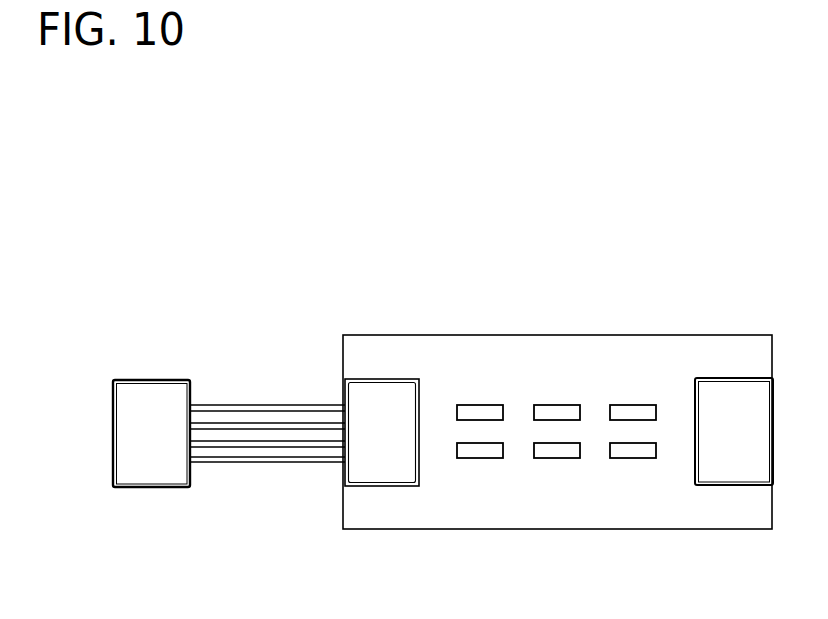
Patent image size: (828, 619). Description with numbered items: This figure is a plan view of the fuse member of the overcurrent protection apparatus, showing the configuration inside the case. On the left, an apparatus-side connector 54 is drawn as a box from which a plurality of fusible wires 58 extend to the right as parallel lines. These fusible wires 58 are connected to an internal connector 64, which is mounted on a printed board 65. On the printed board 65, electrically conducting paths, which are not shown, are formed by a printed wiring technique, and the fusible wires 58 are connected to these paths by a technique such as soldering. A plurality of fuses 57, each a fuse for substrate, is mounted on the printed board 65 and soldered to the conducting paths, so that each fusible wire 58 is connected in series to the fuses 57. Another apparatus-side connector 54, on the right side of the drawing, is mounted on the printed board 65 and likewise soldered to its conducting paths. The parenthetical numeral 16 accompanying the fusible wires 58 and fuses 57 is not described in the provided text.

The wiring member 16 is at (441, 399).
The apparatus-side connector 54 is at (152, 468).
The fuse 57 is at (485, 452).
The fusible wire 58 is at (252, 424).
The internal connector 64 is at (388, 472).
The printed board 65 is at (554, 508).